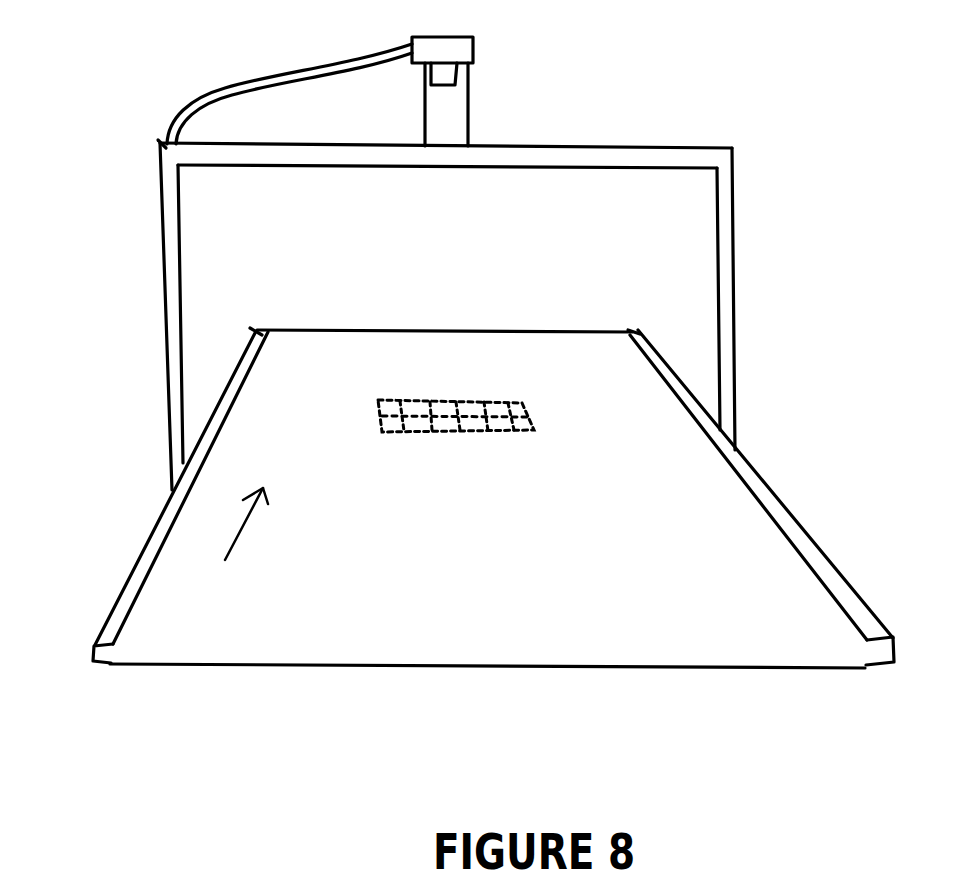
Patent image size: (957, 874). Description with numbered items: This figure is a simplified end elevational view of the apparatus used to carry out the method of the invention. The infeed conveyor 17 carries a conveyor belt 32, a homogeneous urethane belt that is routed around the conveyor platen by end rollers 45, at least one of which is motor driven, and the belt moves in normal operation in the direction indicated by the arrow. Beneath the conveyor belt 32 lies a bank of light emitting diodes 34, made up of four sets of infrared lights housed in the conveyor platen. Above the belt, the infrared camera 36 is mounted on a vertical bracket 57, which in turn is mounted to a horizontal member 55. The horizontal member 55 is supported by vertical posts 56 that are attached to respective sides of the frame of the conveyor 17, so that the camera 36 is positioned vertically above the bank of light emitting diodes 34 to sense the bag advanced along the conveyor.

The infeed conveyor 17 is at (485, 690).
The conveyor belt 32 is at (494, 499).
The bank of light emitting diodes 34 is at (520, 428).
The infrared camera 36 is at (475, 47).
The end rollers 45 is at (257, 327).
The horizontal member 55 is at (687, 147).
The vertical posts 56 is at (739, 327).
The vertical bracket 57 is at (470, 108).